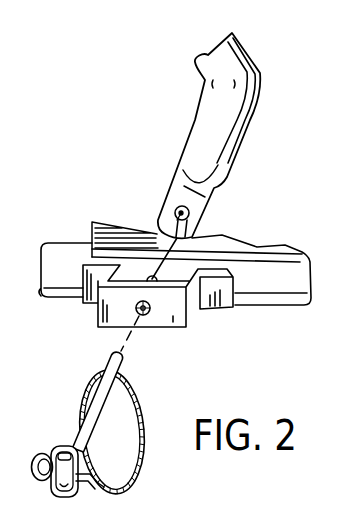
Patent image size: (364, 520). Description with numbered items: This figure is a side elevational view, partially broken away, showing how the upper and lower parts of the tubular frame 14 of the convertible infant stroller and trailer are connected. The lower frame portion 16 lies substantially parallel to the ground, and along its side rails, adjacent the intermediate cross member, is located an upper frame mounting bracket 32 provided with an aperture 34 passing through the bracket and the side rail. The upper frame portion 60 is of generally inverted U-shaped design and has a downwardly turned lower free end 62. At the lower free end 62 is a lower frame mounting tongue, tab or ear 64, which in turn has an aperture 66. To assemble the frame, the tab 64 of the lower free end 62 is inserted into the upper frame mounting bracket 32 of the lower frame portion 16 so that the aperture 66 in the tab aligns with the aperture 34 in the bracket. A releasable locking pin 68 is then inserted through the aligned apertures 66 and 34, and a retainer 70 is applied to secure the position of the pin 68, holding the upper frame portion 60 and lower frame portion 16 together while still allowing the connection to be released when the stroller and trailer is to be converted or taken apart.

The tubular frame 14 is at (54, 250).
The lower frame portion 16 is at (76, 249).
The upper frame mounting bracket 32 is at (207, 299).
The aperture 34 is at (152, 272).
The upper frame portion 60 is at (228, 135).
The lower free end 62 is at (237, 138).
The lower frame mounting tab 64 is at (203, 209).
The aperture 66 is at (190, 218).
The releasable locking pin 68 is at (75, 437).
The retainer 70 is at (137, 462).